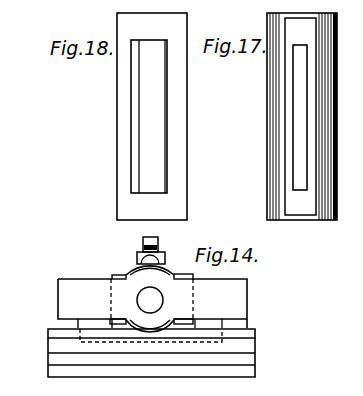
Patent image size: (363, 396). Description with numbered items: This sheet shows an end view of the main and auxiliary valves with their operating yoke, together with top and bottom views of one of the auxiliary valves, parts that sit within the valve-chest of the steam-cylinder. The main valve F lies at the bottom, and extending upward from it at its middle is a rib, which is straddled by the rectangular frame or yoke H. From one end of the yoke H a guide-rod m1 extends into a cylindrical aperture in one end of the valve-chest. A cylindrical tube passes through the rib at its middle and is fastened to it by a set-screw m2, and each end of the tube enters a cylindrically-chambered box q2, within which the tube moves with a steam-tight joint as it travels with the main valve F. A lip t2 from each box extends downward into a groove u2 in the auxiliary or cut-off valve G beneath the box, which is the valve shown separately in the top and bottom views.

In FIG. 18, the auxiliary or cut-off valve G is at (152, 116).
In FIG. 17, the auxiliary or cut-off valve G is at (302, 116).
In FIG. 17, the groove u2 is at (301, 117).
In FIG. 14, the groove u2 is at (81, 343).
In FIG. 14, the rectangular frame or yoke H is at (152, 303).
In FIG. 14, the guide-rod m1 is at (150, 299).
In FIG. 14, the cylindrically-chambered box q2 is at (151, 292).
In FIG. 14, the set-screw m2 is at (159, 249).
In FIG. 14, the lip t2 is at (95, 317).
In FIG. 14, the main valve F is at (151, 357).